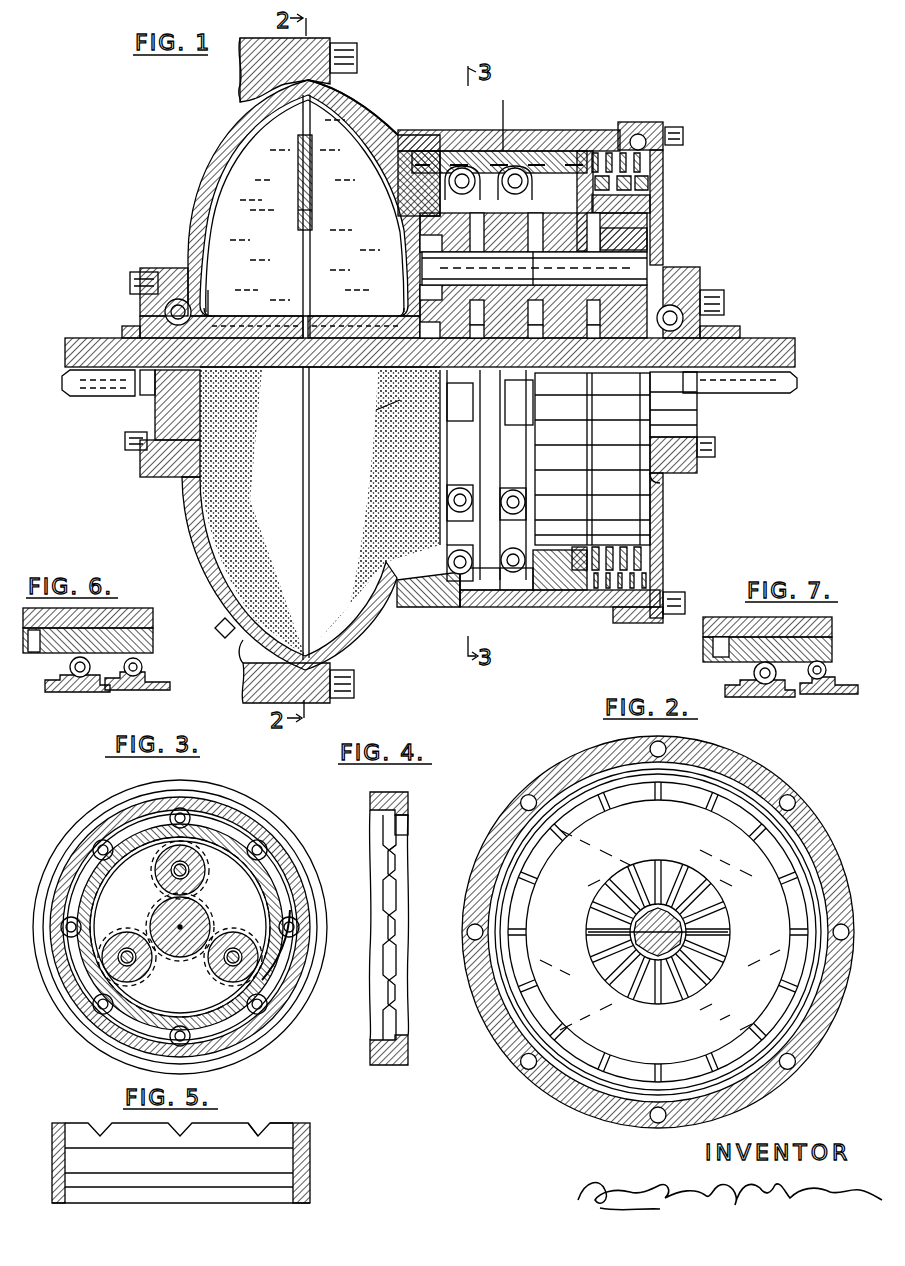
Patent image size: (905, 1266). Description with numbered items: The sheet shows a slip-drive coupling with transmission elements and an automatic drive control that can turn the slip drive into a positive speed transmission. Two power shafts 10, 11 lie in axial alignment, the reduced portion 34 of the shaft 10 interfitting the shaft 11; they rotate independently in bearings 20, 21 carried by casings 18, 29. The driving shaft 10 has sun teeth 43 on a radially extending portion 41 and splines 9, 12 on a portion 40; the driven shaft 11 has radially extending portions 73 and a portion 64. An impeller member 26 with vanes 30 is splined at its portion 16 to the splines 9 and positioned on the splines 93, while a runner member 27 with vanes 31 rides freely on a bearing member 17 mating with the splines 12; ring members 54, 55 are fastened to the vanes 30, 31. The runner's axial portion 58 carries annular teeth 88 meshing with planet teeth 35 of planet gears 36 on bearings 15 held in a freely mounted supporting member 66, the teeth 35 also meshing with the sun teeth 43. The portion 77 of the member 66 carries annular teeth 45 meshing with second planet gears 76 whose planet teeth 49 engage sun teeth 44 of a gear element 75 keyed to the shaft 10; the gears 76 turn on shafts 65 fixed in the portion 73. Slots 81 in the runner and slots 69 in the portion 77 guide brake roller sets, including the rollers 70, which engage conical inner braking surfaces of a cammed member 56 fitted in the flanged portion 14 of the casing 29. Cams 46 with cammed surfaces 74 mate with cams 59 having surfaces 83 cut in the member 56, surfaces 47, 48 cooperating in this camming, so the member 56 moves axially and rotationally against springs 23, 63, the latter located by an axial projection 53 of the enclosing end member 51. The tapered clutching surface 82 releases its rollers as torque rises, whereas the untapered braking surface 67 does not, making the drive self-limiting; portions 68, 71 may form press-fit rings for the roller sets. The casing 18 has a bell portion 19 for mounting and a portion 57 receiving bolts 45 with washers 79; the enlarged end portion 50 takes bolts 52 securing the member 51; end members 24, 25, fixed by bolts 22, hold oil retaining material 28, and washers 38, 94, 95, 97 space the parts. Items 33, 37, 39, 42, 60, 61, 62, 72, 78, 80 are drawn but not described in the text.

In FIG. 1, the splines 9 is at (255, 308).
In FIG. 1, the power shaft 10 is at (80, 395).
In FIG. 1, the power shaft 11 is at (783, 393).
In FIG. 1, the splines 12 is at (430, 342).
In FIG. 1, the axially extending flanged portion 14 is at (535, 615).
In FIG. 6, the axially extending flanged portion 14 is at (140, 625).
In FIG. 7, the axially extending flanged portion 14 is at (845, 615).
In FIG. 3, the axially extending flanged portion 14 is at (230, 812).
In FIG. 4, the axially extending flanged portion 14 is at (385, 1065).
In FIG. 1, the bearing 15 is at (534, 268).
In FIG. 3, the bearing 15 is at (238, 930).
In FIG. 1, the splined portion 16 is at (304, 299).
In FIG. 2, the splined portion 16 is at (705, 912).
In FIG. 1, the bearing member 17 is at (330, 318).
In FIG. 1, the casing 18 is at (212, 588).
In FIG. 2, the casing 18 is at (565, 780).
In FIG. 1, the bell portion 19 is at (272, 660).
In FIG. 1, the bearing 20 is at (155, 424).
In FIG. 1, the bearing 21 is at (697, 410).
In FIG. 1, the bolts 22 is at (125, 448).
In FIG. 1, the spring 23 is at (664, 168).
In FIG. 1, the end member 24 is at (148, 272).
In FIG. 1, the end member 25 is at (685, 275).
In FIG. 1, the impeller member 26 is at (202, 200).
In FIG. 2, the impeller member 26 is at (560, 1068).
In FIG. 1, the runner member 27 is at (415, 156).
In FIG. 1, the oil retaining material 28 is at (124, 332).
In FIG. 1, the casing 29 is at (338, 94).
In FIG. 1, the vanes 30 is at (305, 210).
In FIG. 2, the vanes 30 is at (628, 782).
In FIG. 1, the vanes 31 is at (312, 142).
In FIG. 1, the gear block 33 is at (420, 225).
In FIG. 1, the reduced portion 34 is at (592, 459).
In FIG. 3, the planet teeth 35 is at (160, 872).
In FIG. 1, the planet gears 36 is at (422, 262).
In FIG. 3, the planet gears 36 is at (200, 875).
In FIG. 1, the housing ring 37 is at (430, 150).
In FIG. 4, the housing ring 37 is at (370, 832).
In FIG. 1, the washer 38 is at (712, 290).
In FIG. 1, the lower chamber 39 is at (303, 527).
In FIG. 1, the shaft portion 40 is at (221, 342).
In FIG. 2, the shaft portion 40 is at (636, 940).
In FIG. 1, the radially extending portion 41 is at (432, 338).
In FIG. 3, the radially extending portion 41 is at (160, 922).
In FIG. 1, the ball bearing 42 is at (448, 182).
In FIG. 1, the sun teeth 43 is at (425, 300).
In FIG. 3, the sun teeth 43 is at (180, 960).
In FIG. 1, the sun teeth 44 is at (515, 405).
In FIG. 1, the bolts 45 is at (345, 58).
In FIG. 1, the cams 46 is at (440, 605).
In FIG. 6, the cams 46 is at (34, 652).
In FIG. 7, the cams 46 is at (715, 652).
In FIG. 4, the cams 46 is at (400, 828).
In FIG. 1, the cam surface 47 is at (678, 489).
In FIG. 4, the cam surface 48 is at (395, 985).
In FIG. 1, the planet teeth 49 is at (533, 395).
In FIG. 1, the enlarged end portion 50 is at (640, 139).
In FIG. 3, the enlarged end portion 50 is at (265, 818).
In FIG. 1, the enclosing end member 51 is at (650, 530).
In FIG. 1, the bolts 52 is at (685, 598).
In FIG. 1, the axial projection 53 is at (655, 200).
In FIG. 1, the ring member 54 is at (300, 218).
In FIG. 2, the ring member 54 is at (690, 1022).
In FIG. 1, the ring member 55 is at (327, 216).
In FIG. 1, the cammed member 56 is at (560, 570).
In FIG. 6, the cammed member 56 is at (153, 642).
In FIG. 7, the cammed member 56 is at (832, 642).
In FIG. 3, the cammed member 56 is at (80, 848).
In FIG. 5, the cammed member 56 is at (305, 1163).
In FIG. 1, the casing portion 57 is at (284, 70).
In FIG. 1, the axially extending portion 58 is at (400, 205).
In FIG. 6, the axially extending portion 58 is at (90, 690).
In FIG. 3, the axially extending portion 58 is at (125, 812).
In FIG. 1, the cams 59 is at (450, 152).
In FIG. 5, the cams 59 is at (262, 1125).
In FIG. 1, the bottom plate 60 is at (663, 540).
In FIG. 5, the bottom plate 60 is at (300, 1203).
In FIG. 1, the layer 61 is at (500, 607).
In FIG. 5, the layer 61 is at (110, 1180).
In FIG. 1, the shoulder 62 is at (192, 540).
In FIG. 1, the spring 63 is at (650, 562).
In FIG. 1, the driven member portion 64 is at (640, 236).
In FIG. 1, the bearing shafts 65 is at (566, 268).
In FIG. 1, the supporting member 66 is at (491, 325).
In FIG. 2, the supporting member 66 is at (765, 1065).
In FIG. 1, the inner braking surface 67 is at (513, 113).
In FIG. 5, the inner braking surface 67 is at (256, 1163).
In FIG. 1, the retaining portion 68 is at (520, 620).
In FIG. 1, the slots 69 is at (600, 440).
In FIG. 1, the brake rollers 70 is at (520, 492).
In FIG. 6, the brake rollers 70 is at (130, 690).
In FIG. 7, the brake rollers 70 is at (830, 694).
In FIG. 1, the retaining portion 71 is at (462, 607).
In FIG. 1, the chamber wall 72 is at (385, 455).
In FIG. 1, the radially extending portion 73 is at (608, 331).
In FIG. 4, the cammed surfaces 74 is at (396, 850).
In FIG. 1, the gear element 75 is at (524, 345).
In FIG. 1, the planet gears 76 is at (585, 165).
In FIG. 1, the portion 77 is at (511, 192).
In FIG. 7, the portion 77 is at (805, 695).
In FIG. 1, the gear block 78 is at (420, 240).
In FIG. 1, the washers 79 is at (340, 698).
In FIG. 1, the fins 80 is at (650, 180).
In FIG. 1, the slots 81 is at (459, 482).
In FIG. 3, the slots 81 is at (283, 955).
In FIG. 5, the clutching surface 82 is at (275, 1140).
In FIG. 5, the cam surfaces 83 is at (96, 1128).
In FIG. 3, the annular teeth 88 is at (100, 1010).
In FIG. 2, the splines 93 is at (699, 932).
In FIG. 1, the washer 94 is at (218, 300).
In FIG. 1, the spacing washer 95 is at (320, 387).
In FIG. 1, the washer 97 is at (440, 380).